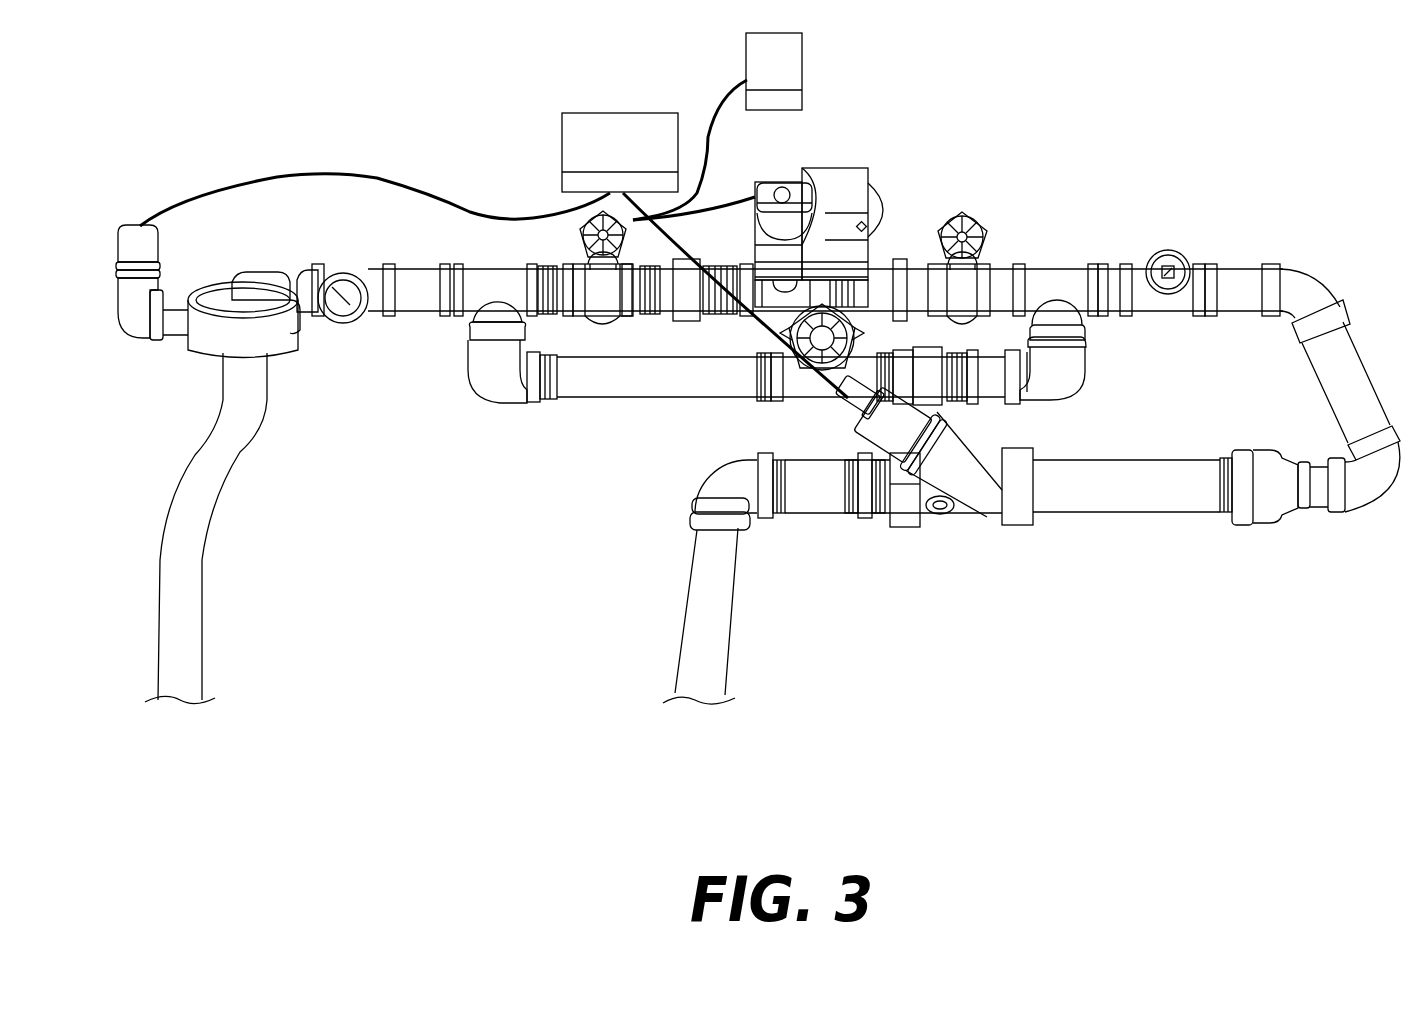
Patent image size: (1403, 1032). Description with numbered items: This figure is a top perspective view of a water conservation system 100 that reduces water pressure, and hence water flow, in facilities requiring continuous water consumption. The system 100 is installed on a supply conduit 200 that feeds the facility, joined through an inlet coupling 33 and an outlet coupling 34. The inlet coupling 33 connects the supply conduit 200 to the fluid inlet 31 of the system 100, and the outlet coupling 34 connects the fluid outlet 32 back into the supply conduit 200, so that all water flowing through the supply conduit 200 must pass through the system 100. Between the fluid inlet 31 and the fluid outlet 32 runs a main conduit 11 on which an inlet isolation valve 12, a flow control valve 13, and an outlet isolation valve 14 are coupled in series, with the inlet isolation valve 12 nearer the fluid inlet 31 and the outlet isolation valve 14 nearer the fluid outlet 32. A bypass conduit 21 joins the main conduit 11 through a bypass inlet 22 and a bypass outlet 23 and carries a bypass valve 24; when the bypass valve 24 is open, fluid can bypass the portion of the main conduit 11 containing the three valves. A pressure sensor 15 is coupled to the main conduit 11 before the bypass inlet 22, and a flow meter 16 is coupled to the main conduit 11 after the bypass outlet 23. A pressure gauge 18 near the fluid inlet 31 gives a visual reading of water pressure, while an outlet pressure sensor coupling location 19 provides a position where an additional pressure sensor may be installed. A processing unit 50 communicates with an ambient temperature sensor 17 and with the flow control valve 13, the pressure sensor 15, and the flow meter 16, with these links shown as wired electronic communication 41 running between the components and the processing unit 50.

The water conservation system 100 is at (1285, 113).
The main conduit 11 is at (900, 248).
The inlet isolation valve 12 is at (586, 260).
The flow control valve 13 is at (827, 193).
The outlet isolation valve 14 is at (980, 263).
The pressure sensor 15 is at (142, 253).
The flow meter 16 is at (962, 478).
The ambient temperature sensor 17 is at (787, 63).
The pressure gauge 18 is at (272, 330).
The outlet pressure sensor coupling location 19 is at (1174, 265).
The bypass conduit 21 is at (632, 380).
The bypass inlet 22 is at (468, 320).
The bypass outlet 23 is at (1085, 326).
The bypass valve 24 is at (858, 347).
The fluid inlet 31 is at (295, 275).
The fluid outlet 32 is at (803, 490).
The inlet coupling 33 is at (253, 282).
The outlet coupling 34 is at (733, 487).
The wired electronic communication 41 is at (337, 168).
The processing unit 50 is at (600, 145).
The supply conduit 200 is at (175, 570).